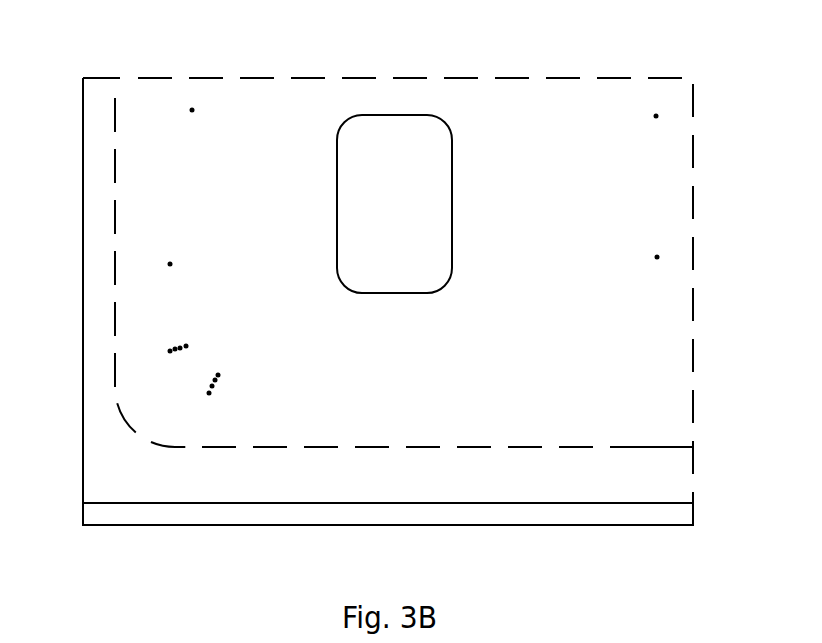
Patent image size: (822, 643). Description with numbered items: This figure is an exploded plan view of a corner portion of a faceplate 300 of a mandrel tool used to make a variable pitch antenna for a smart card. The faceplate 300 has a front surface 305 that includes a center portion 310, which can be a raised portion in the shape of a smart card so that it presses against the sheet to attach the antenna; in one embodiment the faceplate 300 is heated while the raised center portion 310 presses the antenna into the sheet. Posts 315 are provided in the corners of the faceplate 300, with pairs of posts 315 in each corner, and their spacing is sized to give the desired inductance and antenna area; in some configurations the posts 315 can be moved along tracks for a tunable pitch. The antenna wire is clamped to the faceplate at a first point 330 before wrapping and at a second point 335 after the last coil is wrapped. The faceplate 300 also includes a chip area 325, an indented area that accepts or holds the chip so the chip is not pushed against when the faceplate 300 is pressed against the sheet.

The faceplate 300 is at (706, 163).
The front surface 305 is at (104, 372).
The center portion 310 is at (236, 217).
The posts 315 is at (220, 373).
The chip area 325 is at (411, 209).
The first point 330 is at (192, 110).
The second point 335 is at (170, 264).